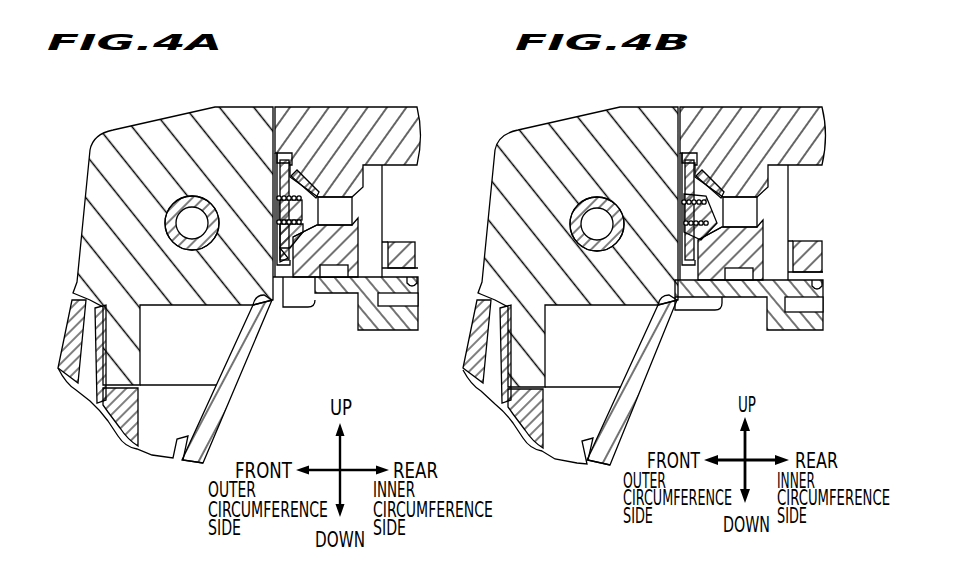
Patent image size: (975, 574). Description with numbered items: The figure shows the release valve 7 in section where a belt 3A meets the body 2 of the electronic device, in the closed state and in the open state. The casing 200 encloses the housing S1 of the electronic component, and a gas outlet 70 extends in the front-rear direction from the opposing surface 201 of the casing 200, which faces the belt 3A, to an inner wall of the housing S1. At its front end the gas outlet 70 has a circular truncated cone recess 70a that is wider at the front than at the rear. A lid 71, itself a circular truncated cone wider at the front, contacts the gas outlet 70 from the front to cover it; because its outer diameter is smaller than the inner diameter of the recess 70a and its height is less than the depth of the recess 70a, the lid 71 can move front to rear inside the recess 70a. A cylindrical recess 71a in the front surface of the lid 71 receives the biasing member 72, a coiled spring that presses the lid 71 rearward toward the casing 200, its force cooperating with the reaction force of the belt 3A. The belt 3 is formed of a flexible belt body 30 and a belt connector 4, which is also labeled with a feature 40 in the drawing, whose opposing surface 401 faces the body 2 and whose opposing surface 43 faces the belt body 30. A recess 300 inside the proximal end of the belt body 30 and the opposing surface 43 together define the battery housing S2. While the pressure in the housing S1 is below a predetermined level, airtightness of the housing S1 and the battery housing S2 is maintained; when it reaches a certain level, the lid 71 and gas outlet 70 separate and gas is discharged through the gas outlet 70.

In FIG. 4A, the body of the electronic device 2 is at (355, 334).
In FIG. 4B, the body of the electronic device 2 is at (756, 336).
In FIG. 4A, the casing 200 is at (371, 340).
In FIG. 4B, the casing 200 is at (756, 336).
In FIG. 4A, the belt 3 is at (234, 416).
In FIG. 4B, the belt 3 is at (641, 417).
In FIG. 4A, the belt 3A is at (206, 457).
In FIG. 4B, the belt 3A is at (641, 417).
In FIG. 4A, the belt connector 4 is at (171, 120).
In FIG. 4B, the belt connector 4 is at (578, 229).
In FIG. 4A, the bolt hole 40 is at (171, 198).
In FIG. 4B, the bolt hole 40 is at (567, 171).
In FIG. 4A, the opposing surface 43 is at (74, 298).
In FIG. 4B, the opposing surface 43 is at (478, 335).
In FIG. 4A, the belt body 30 is at (61, 372).
In FIG. 4B, the belt body 30 is at (499, 410).
In FIG. 4A, the recess 300 is at (130, 439).
In FIG. 4B, the recess 300 is at (536, 437).
In FIG. 4A, the battery housing S2 is at (170, 440).
In FIG. 4B, the battery housing S2 is at (536, 437).
In FIG. 4A, the opposing surface 201 is at (234, 416).
In FIG. 4B, the opposing surface 201 is at (641, 417).
In FIG. 4A, the opposing surface 401 is at (234, 416).
In FIG. 4B, the opposing surface 401 is at (641, 417).
In FIG. 4A, the release valve 7 is at (380, 75).
In FIG. 4B, the release valve 7 is at (732, 188).
In FIG. 4A, the gas outlet 70 is at (341, 193).
In FIG. 4B, the gas outlet 70 is at (753, 204).
In FIG. 4A, the recess 70a is at (306, 236).
In FIG. 4B, the recess 70a is at (731, 281).
In FIG. 4A, the lid 71 is at (284, 160).
In FIG. 4B, the lid 71 is at (704, 157).
In FIG. 4A, the recess 71a is at (289, 266).
In FIG. 4A, the biasing member 72 is at (271, 165).
In FIG. 4B, the biasing member 72 is at (670, 169).
In FIG. 4A, the housing of the electronic component S1 is at (397, 170).
In FIG. 4B, the housing of the electronic component S1 is at (809, 177).